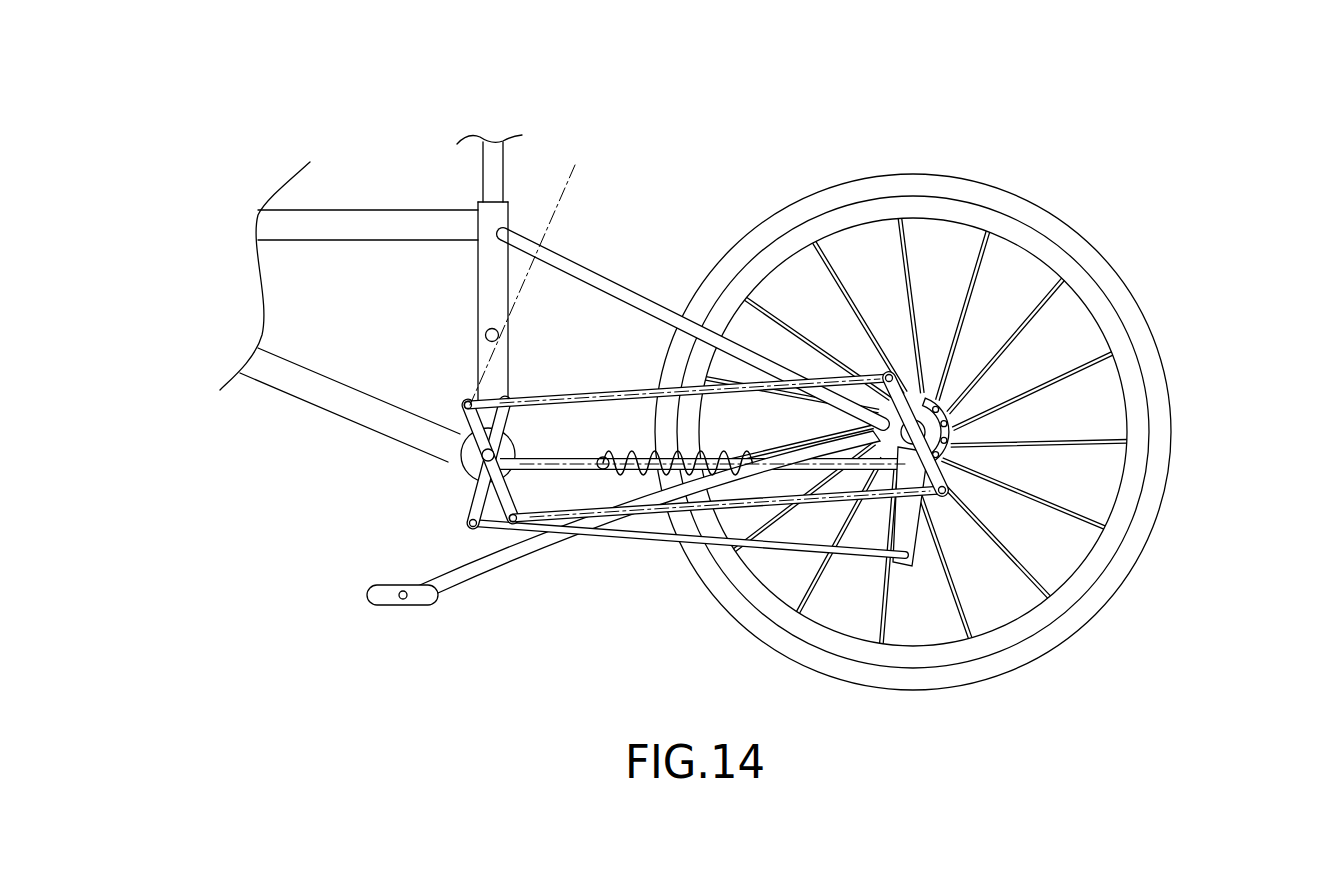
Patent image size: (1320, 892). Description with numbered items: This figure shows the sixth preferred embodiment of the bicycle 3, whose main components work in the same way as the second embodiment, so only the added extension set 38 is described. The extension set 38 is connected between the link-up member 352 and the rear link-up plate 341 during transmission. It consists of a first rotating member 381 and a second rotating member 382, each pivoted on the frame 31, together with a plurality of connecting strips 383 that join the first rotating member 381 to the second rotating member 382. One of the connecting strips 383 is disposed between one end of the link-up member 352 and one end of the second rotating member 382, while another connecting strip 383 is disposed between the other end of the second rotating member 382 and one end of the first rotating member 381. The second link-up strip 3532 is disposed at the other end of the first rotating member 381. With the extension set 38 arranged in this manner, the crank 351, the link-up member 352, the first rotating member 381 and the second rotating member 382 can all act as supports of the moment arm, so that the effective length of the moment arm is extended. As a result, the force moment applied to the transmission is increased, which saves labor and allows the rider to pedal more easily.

The bicycle 3 is at (151, 179).
The frame 31 is at (392, 225).
The second link-up strip 3532 is at (552, 269).
The connecting strips 383 is at (725, 395).
The second rotating member 382 is at (893, 385).
The rear link-up plate 341 is at (925, 442).
The extension set 38 is at (721, 393).
The first rotating member 381 is at (478, 425).
The link-up member 352 is at (480, 497).
The crank 351 is at (925, 533).